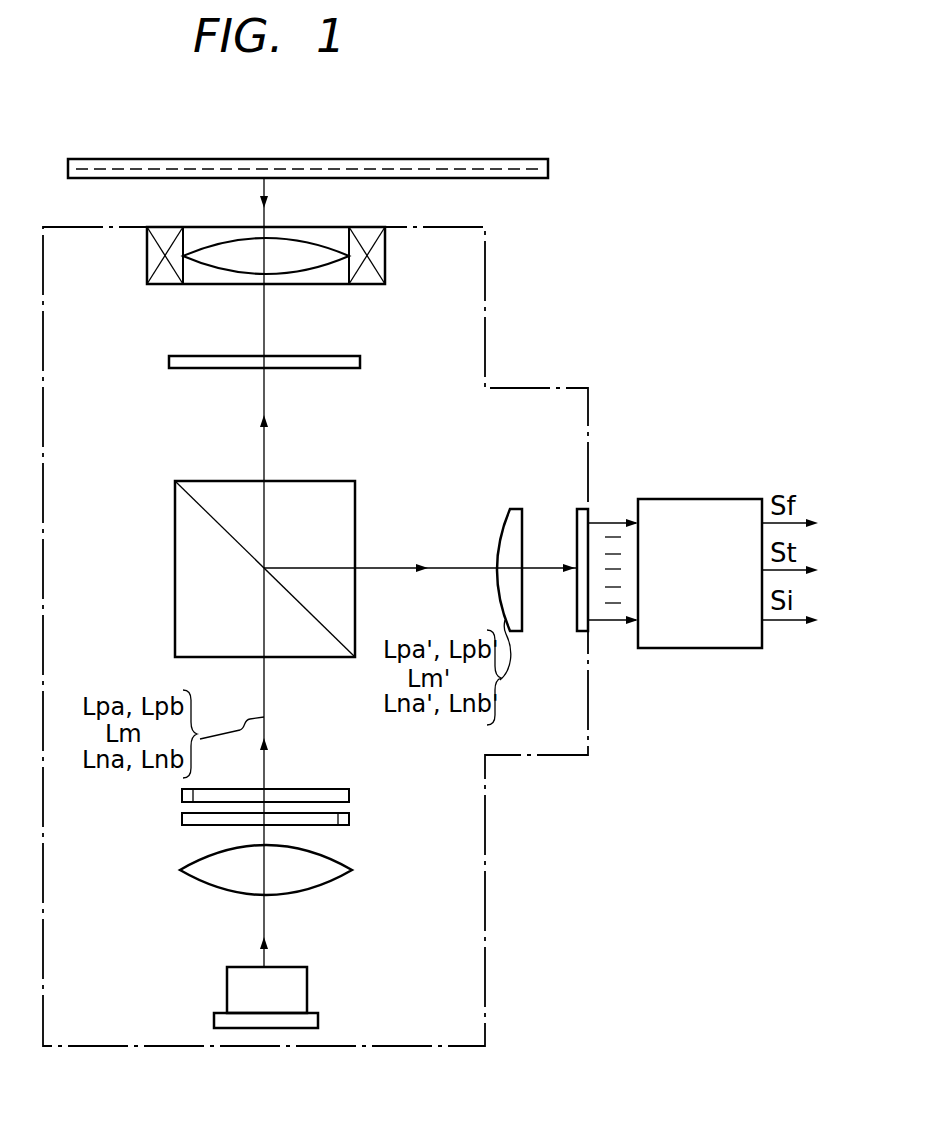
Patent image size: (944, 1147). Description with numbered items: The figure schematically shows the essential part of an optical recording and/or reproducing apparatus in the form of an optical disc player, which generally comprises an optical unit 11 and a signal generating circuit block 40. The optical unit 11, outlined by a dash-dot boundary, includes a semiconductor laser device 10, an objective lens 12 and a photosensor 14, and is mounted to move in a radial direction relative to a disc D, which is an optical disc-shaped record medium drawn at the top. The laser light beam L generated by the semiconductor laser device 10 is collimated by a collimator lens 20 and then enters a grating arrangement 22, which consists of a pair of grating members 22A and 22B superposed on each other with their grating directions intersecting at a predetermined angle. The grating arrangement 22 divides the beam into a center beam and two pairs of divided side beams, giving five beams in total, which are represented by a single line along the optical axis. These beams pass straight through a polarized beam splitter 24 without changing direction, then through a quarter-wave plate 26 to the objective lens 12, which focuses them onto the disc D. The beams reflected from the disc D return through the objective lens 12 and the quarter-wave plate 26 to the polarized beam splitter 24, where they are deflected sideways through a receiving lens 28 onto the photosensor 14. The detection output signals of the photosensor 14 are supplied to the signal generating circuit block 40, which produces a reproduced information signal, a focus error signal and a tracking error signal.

The disc D is at (465, 158).
The semiconductor laser device 10 is at (307, 982).
The optical unit 11 is at (490, 875).
The objective lens 12 is at (315, 242).
The photosensor 14 is at (577, 509).
The collimator lens 20 is at (195, 886).
The grating arrangement 22 is at (333, 807).
The grating member 22A is at (349, 822).
The grating member 22B is at (349, 795).
The polarized beam splitter 24 is at (323, 491).
The ¼-wave plate 26 is at (316, 361).
The receiving lens 28 is at (500, 520).
The signal generating circuit block 40 is at (723, 499).
The laser light beam L is at (264, 922).